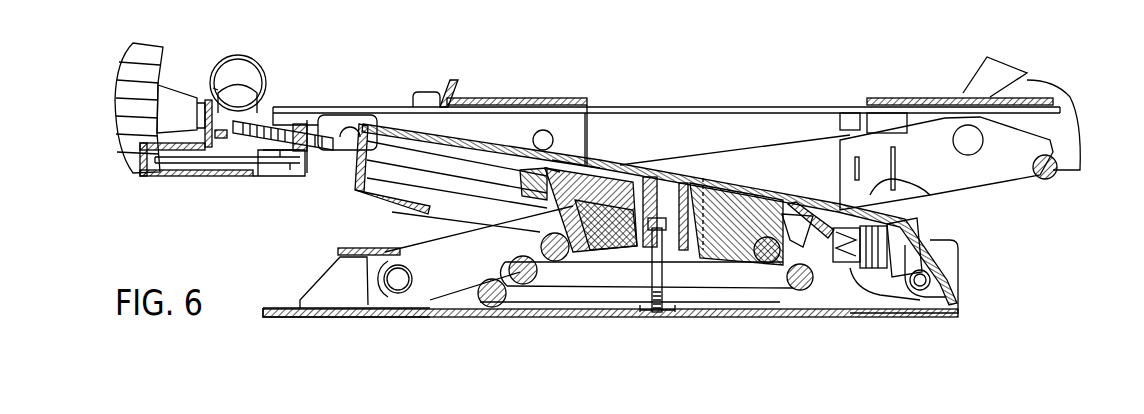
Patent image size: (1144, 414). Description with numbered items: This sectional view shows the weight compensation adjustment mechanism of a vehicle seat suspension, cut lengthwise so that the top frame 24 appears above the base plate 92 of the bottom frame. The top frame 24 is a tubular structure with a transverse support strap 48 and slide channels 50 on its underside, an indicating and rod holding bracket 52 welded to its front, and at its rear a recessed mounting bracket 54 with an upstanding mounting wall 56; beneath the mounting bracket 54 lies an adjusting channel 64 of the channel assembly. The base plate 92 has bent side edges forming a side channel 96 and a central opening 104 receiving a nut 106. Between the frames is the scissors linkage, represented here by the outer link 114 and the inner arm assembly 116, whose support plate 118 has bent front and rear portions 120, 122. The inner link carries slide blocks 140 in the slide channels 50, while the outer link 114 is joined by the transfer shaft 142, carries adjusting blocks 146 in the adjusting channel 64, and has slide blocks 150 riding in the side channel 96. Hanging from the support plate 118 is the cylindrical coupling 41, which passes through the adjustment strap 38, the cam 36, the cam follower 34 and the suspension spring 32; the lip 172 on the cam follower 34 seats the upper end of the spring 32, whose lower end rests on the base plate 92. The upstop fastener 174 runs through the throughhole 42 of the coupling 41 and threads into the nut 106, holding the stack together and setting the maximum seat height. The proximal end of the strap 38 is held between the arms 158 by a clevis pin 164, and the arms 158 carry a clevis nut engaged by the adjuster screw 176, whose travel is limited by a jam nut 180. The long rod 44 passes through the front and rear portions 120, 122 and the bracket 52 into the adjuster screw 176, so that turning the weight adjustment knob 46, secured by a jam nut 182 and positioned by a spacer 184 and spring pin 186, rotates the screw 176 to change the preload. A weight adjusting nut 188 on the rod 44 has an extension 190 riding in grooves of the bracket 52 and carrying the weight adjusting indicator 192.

The top frame 24 is at (255, 65).
The suspension spring 32 is at (563, 303).
The cam follower 34 is at (540, 233).
The cam 36 is at (617, 173).
The adjustment strap 38 is at (757, 190).
The cylindrical coupling 41 is at (702, 175).
The throughhole 42 is at (647, 267).
The long rod 44 is at (498, 182).
The weight adjustment knob 46 is at (122, 92).
The transverse support strap 48 is at (503, 102).
The slide channels 50 is at (530, 123).
The indicating and rod holding bracket 52 is at (260, 180).
The mounting bracket 54 is at (947, 97).
The mounting walls 56 is at (1013, 73).
The adjusting channel 64 is at (1073, 137).
The base plate 92 is at (457, 315).
The side channels 96 is at (320, 287).
The central opening 104 is at (690, 307).
The nut 106 is at (670, 307).
The outer link 114 is at (810, 152).
The inner arm assembly 116 is at (683, 173).
The support plate 118 is at (590, 160).
The front portion 120 is at (357, 177).
The rear portion 122 is at (947, 267).
The slide blocks 140 is at (360, 117).
The transfer shaft 142 is at (1048, 180).
The adjusting blocks 146 is at (1003, 110).
The slide blocks 150 is at (400, 313).
The arms 158 is at (818, 225).
The clevis pin 164 is at (837, 263).
The lip 172 is at (750, 268).
The upstop fastener 174 is at (643, 295).
The adjuster screw 176 is at (870, 290).
The jam nut 180 is at (907, 242).
The jam nut 182 is at (198, 108).
The spacer 184 is at (228, 118).
The spring pin 186 is at (230, 117).
The weight adjusting nut 188 is at (297, 118).
The extension 190 is at (290, 162).
The weight adjusting indicator 192 is at (183, 160).